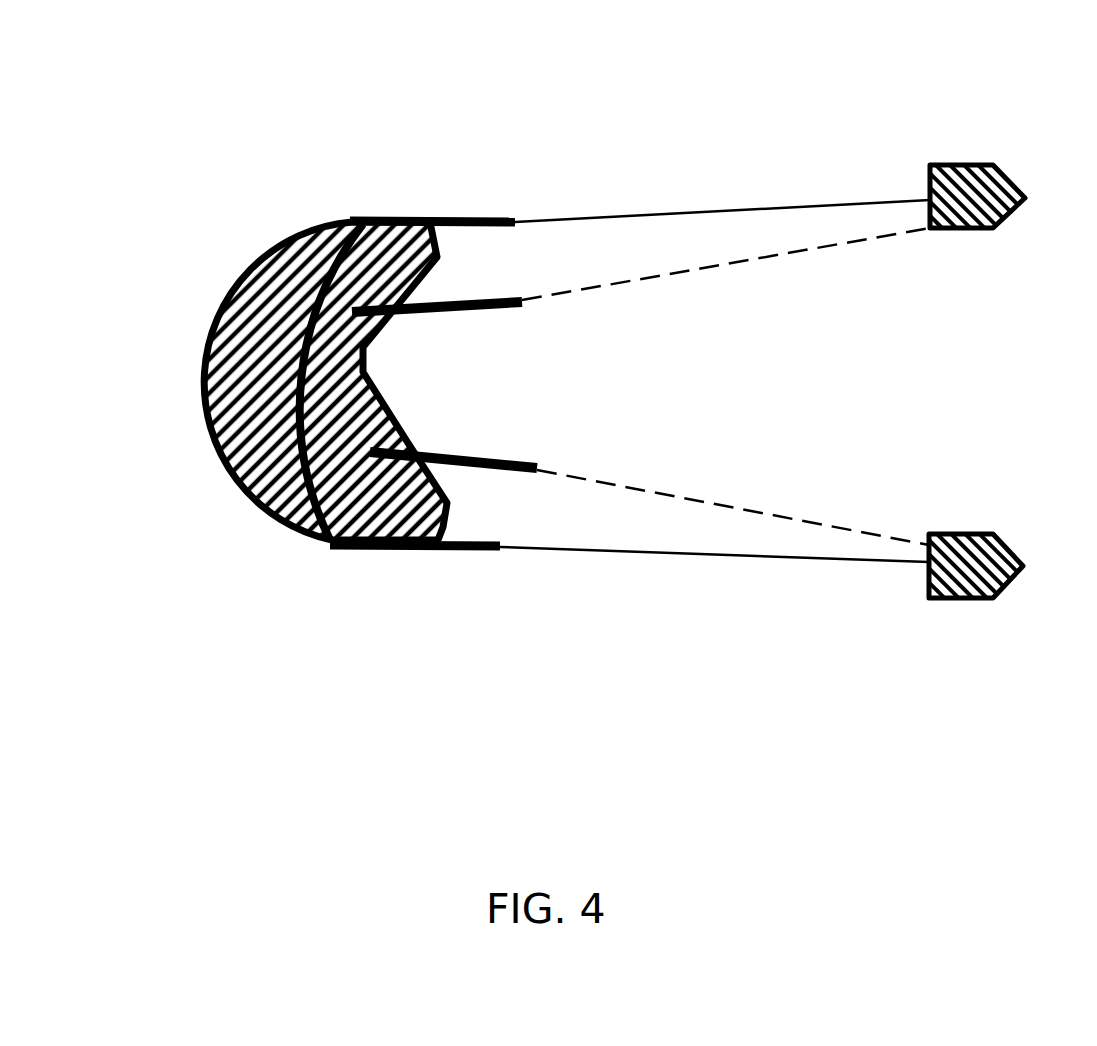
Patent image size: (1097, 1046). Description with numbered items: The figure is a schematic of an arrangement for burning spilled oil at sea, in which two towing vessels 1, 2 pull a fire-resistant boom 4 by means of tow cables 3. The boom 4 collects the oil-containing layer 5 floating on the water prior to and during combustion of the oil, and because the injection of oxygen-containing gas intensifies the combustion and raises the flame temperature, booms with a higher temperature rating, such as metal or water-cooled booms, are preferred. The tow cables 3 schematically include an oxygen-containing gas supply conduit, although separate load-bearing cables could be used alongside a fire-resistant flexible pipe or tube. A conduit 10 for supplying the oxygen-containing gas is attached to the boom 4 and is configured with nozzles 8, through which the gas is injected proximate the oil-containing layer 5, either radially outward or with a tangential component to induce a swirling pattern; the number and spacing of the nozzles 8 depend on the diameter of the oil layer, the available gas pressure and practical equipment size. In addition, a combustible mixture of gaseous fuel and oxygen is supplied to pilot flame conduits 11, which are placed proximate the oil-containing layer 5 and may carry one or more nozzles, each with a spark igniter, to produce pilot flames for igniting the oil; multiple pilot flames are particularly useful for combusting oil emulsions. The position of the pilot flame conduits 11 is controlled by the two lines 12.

The towing vessel 1 is at (982, 165).
The towing vessel 2 is at (970, 598).
The tow cable 3 is at (600, 217).
The fire-resistant boom 4 is at (418, 222).
The oil-containing layer 5 is at (225, 300).
The nozzle 8 is at (323, 288).
The conduit 10 is at (290, 427).
The pilot flame conduit 11 is at (453, 313).
The line 12 is at (673, 273).